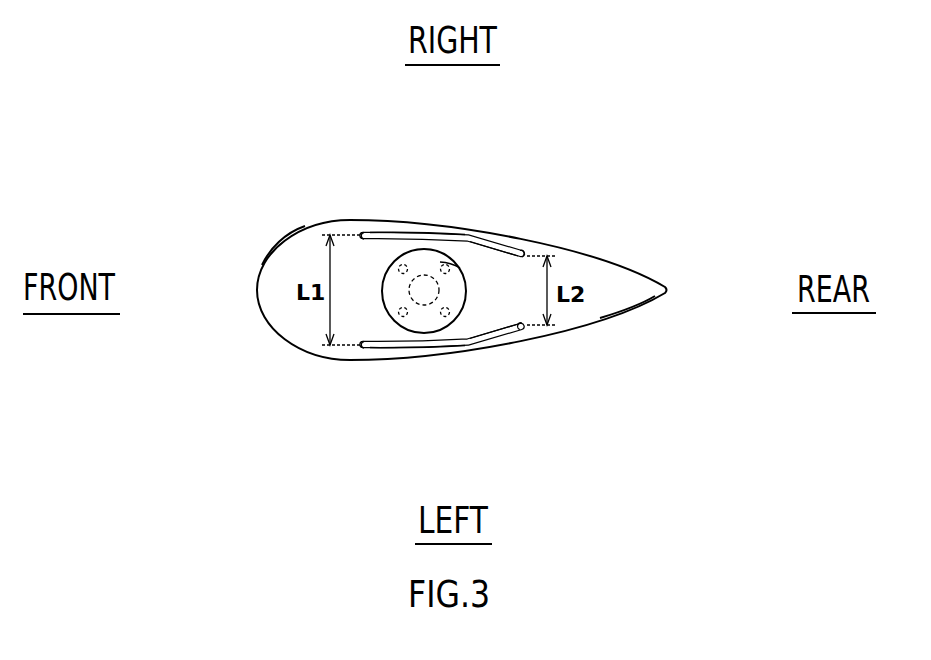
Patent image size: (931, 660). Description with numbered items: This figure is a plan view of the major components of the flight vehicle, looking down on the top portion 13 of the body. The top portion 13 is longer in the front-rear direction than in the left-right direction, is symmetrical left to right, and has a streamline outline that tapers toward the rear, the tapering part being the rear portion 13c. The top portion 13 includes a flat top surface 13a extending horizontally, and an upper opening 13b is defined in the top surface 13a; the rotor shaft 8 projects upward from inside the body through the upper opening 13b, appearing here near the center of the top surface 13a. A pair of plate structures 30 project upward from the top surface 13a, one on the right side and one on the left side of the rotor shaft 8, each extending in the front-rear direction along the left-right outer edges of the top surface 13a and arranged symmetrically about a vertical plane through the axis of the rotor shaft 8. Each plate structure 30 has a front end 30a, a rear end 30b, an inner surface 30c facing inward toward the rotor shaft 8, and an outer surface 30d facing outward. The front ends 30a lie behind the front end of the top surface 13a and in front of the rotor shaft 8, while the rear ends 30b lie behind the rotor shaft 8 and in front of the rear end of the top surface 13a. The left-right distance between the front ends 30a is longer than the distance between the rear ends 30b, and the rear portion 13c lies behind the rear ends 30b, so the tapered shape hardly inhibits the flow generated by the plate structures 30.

The rotor shaft 8 is at (447, 292).
The top portion 13 is at (265, 318).
The top surface 13a is at (280, 272).
The upper opening 13b is at (452, 262).
The rear portion 13c is at (640, 307).
The plate structures 30 is at (393, 232).
The front end 30a is at (362, 234).
The rear end 30b is at (527, 247).
The inner surface 30c is at (488, 256).
The outer surface 30d is at (438, 233).